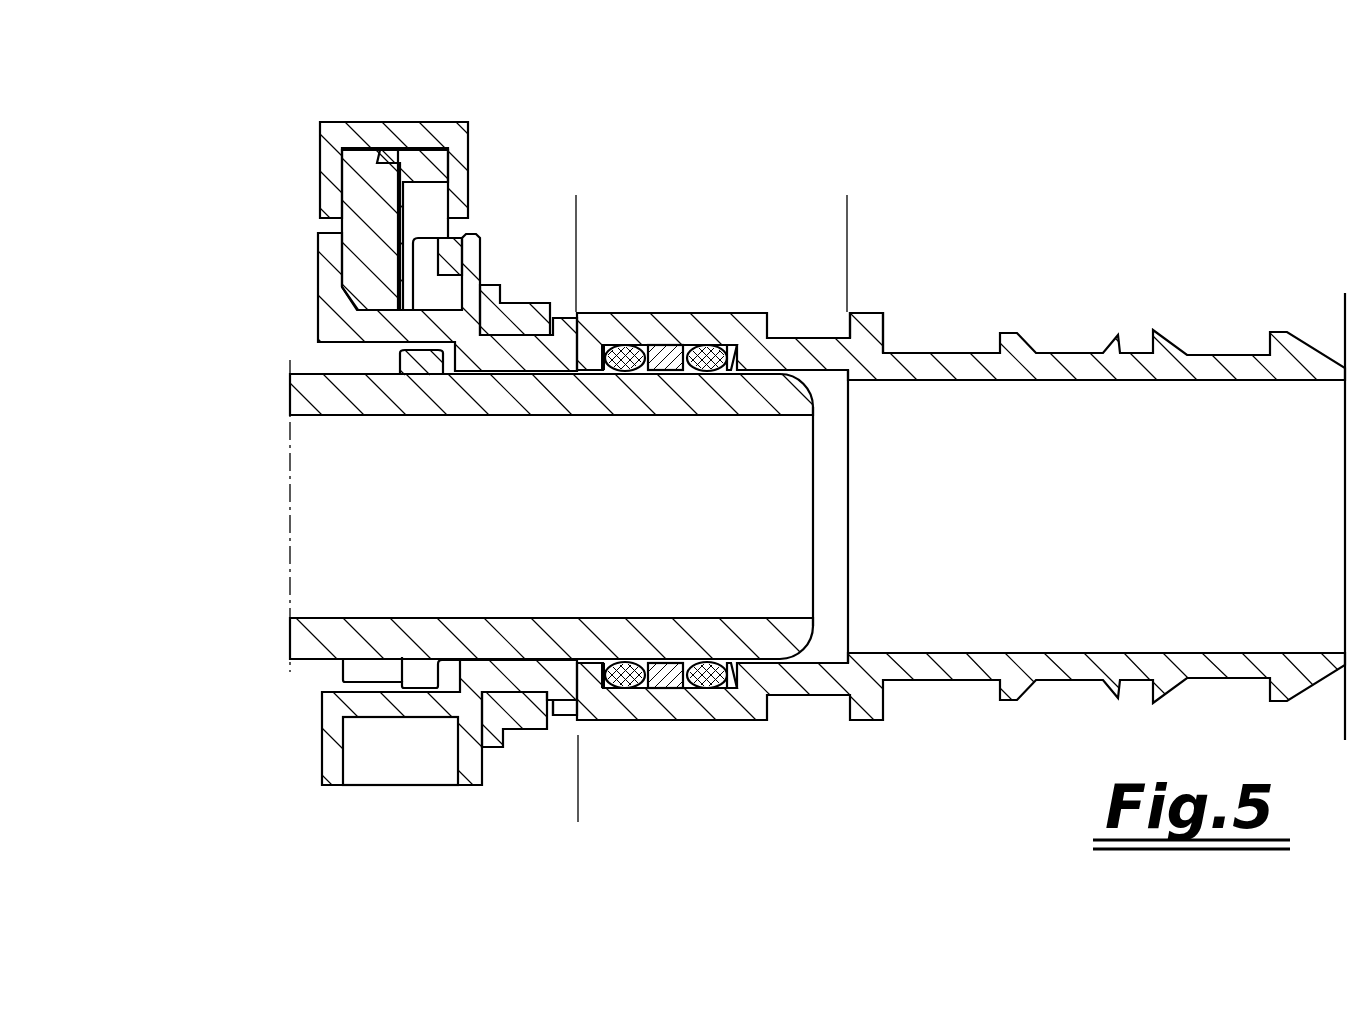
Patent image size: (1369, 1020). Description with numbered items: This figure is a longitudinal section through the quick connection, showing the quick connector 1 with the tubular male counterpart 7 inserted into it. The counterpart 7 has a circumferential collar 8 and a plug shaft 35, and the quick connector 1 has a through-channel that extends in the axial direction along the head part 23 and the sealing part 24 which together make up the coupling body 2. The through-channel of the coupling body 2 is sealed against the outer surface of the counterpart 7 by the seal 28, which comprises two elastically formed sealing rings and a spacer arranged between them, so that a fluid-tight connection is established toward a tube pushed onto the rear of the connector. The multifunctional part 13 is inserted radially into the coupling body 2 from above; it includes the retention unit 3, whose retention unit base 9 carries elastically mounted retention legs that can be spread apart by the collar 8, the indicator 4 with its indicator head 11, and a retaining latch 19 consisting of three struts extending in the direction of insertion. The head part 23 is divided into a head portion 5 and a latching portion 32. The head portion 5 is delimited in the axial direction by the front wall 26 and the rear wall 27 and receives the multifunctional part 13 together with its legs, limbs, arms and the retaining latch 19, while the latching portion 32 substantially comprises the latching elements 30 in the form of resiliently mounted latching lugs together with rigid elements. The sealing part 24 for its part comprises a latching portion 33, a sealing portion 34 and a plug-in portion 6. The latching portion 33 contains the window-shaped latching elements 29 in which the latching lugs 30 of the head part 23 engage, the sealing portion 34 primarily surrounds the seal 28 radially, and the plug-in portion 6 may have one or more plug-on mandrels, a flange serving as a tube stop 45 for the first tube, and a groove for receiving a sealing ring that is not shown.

The quick connector 1 is at (222, 798).
The coupling body 2 is at (828, 767).
The retention unit 3 is at (446, 132).
The indicator 4 is at (441, 143).
The head portion 5 is at (323, 815).
The plug-in portion 6 is at (1345, 200).
The counterpart 7 is at (288, 640).
The circumferential collar 8 is at (420, 355).
The retention unit base 9 is at (380, 130).
The indicator head 11 is at (415, 148).
The multifunctional part 13 is at (336, 163).
The retaining latch 19 is at (350, 205).
The head part 23 is at (577, 878).
The sealing part 24 is at (1345, 120).
The front wall 26 is at (330, 735).
The rear wall 27 is at (470, 762).
The seal 28 is at (678, 698).
The latching elements 29 is at (557, 300).
The latching elements 30 is at (583, 702).
The latching portion 32 is at (575, 815).
The latching portion 33 is at (572, 204).
The sealing portion 34 is at (833, 203).
The plug shaft 35 is at (573, 392).
The tube stop 45 is at (866, 318).